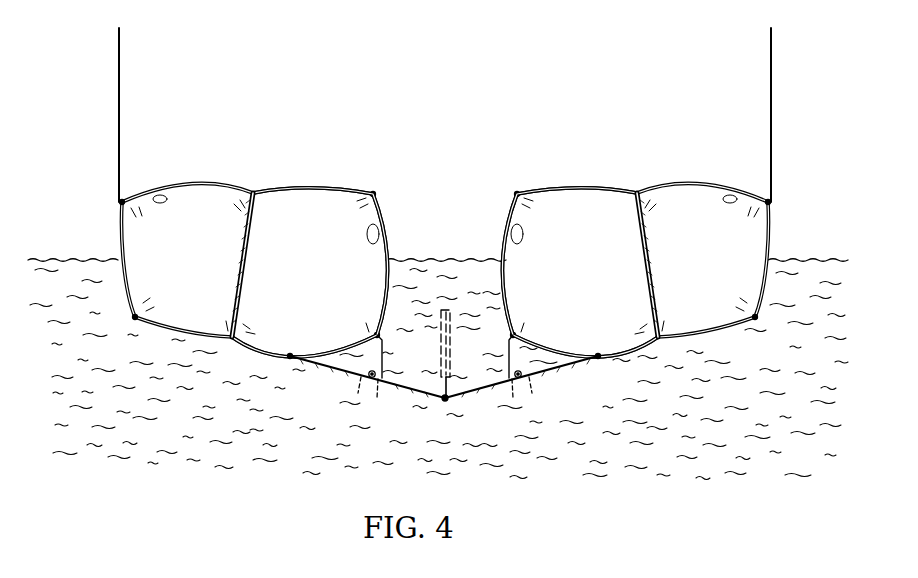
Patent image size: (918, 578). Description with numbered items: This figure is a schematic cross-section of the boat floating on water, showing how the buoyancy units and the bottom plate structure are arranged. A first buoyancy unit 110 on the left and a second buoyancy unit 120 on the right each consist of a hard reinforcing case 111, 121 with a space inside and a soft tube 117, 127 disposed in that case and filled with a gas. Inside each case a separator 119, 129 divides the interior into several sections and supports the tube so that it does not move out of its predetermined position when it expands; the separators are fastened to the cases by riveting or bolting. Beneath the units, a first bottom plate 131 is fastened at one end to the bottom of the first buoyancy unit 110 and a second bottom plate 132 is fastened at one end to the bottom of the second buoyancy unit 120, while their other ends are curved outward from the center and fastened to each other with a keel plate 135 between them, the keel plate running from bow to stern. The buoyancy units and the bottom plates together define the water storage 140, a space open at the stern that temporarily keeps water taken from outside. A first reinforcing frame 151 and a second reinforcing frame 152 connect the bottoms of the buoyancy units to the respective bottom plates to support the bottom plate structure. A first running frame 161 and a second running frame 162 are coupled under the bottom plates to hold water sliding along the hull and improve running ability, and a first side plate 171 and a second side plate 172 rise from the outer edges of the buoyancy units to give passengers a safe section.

The first buoyancy unit 110 is at (254, 241).
The reinforcing case 111 is at (320, 181).
The tube 117 is at (153, 203).
The separator 119 is at (251, 190).
The second buoyancy unit 120 is at (636, 242).
The reinforcing case 121 is at (571, 180).
The tube 127 is at (737, 203).
The separator 129 is at (639, 190).
The first bottom plate 131 is at (398, 384).
The second bottom plate 132 is at (572, 363).
The keel plate 135 is at (452, 358).
The water storage 140 is at (439, 248).
The first reinforcing frame 151 is at (386, 356).
The second reinforcing frame 152 is at (504, 356).
The first running frame 161 is at (362, 386).
The second running frame 162 is at (530, 388).
The first side plate 171 is at (121, 92).
The second side plate 172 is at (771, 92).